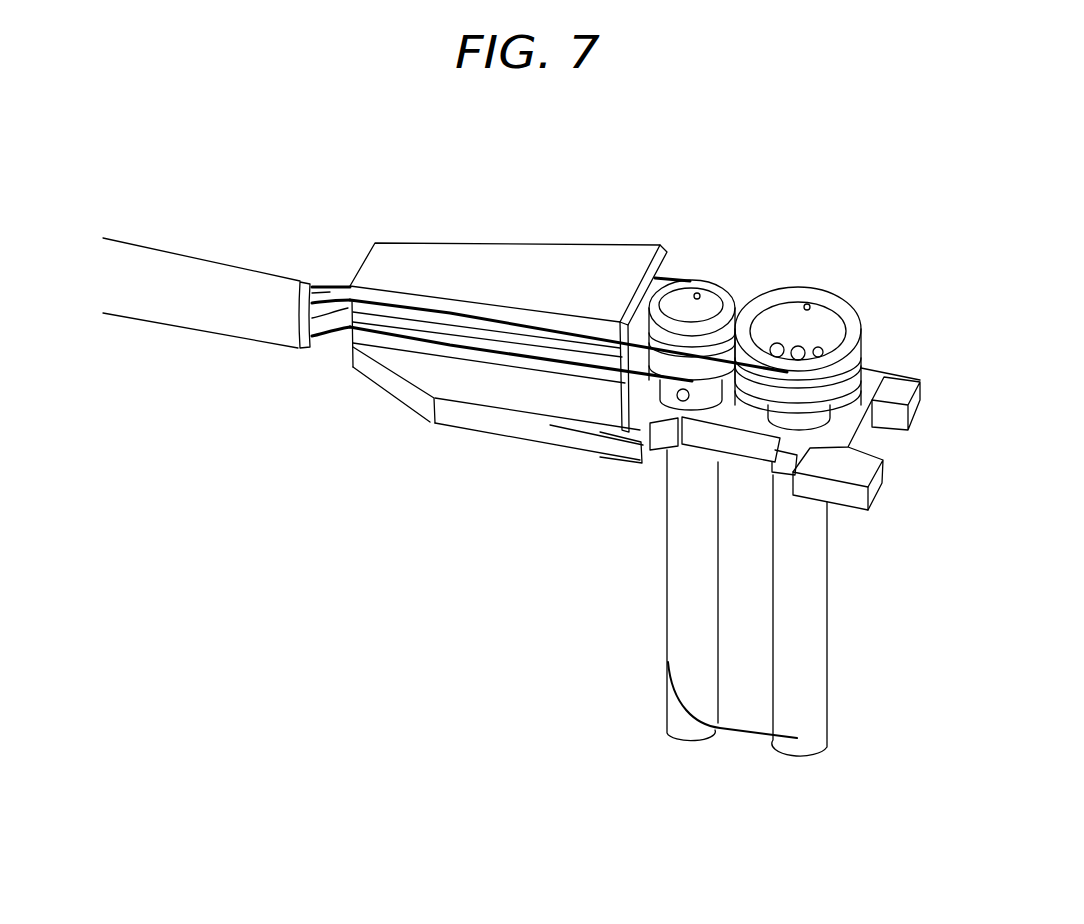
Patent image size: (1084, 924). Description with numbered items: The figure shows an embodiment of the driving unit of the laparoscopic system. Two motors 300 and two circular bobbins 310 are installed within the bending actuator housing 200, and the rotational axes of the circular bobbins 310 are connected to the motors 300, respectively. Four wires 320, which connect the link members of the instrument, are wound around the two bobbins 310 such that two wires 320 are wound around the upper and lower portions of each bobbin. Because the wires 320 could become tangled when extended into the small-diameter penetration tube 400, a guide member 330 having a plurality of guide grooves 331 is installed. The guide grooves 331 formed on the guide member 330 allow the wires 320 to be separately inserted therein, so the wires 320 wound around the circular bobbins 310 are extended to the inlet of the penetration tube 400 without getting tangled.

The bending actuator housing 200 is at (467, 435).
The motors 300 is at (667, 663).
The circular bobbins 310 is at (713, 280).
The wires 320 is at (337, 284).
The guide member 330 is at (477, 265).
The guide grooves 331 is at (600, 380).
The penetration tube 400 is at (215, 317).